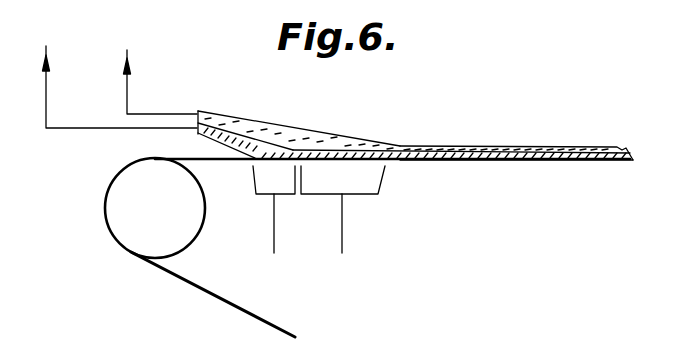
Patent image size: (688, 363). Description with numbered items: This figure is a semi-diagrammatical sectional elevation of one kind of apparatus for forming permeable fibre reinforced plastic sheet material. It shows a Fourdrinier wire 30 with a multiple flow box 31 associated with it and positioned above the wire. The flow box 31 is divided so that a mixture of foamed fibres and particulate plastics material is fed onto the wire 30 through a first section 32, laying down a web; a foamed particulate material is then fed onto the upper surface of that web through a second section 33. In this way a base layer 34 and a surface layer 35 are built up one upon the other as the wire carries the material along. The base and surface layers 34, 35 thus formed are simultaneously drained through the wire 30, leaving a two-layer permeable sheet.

The Fourdrinier wire 30 is at (225, 297).
The multiple flow box 31 is at (235, 114).
The section 32 is at (208, 137).
The second section 33 is at (327, 148).
The base layer 34 is at (510, 160).
The surface layer 35 is at (520, 147).